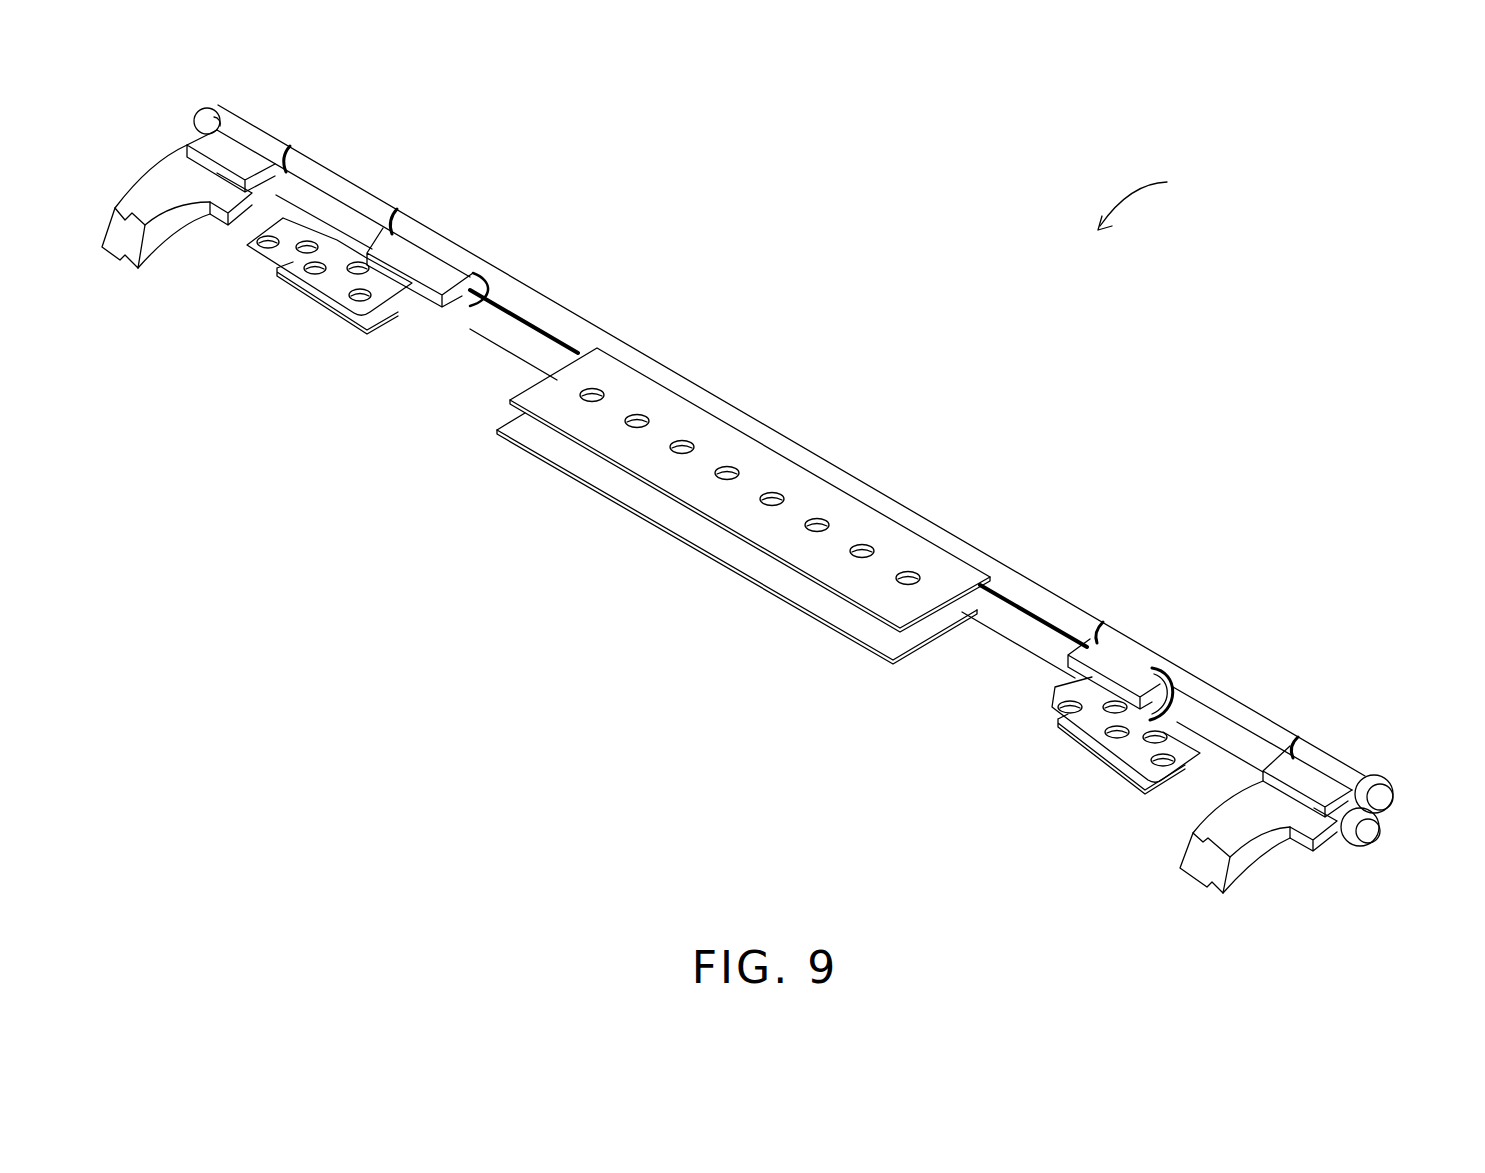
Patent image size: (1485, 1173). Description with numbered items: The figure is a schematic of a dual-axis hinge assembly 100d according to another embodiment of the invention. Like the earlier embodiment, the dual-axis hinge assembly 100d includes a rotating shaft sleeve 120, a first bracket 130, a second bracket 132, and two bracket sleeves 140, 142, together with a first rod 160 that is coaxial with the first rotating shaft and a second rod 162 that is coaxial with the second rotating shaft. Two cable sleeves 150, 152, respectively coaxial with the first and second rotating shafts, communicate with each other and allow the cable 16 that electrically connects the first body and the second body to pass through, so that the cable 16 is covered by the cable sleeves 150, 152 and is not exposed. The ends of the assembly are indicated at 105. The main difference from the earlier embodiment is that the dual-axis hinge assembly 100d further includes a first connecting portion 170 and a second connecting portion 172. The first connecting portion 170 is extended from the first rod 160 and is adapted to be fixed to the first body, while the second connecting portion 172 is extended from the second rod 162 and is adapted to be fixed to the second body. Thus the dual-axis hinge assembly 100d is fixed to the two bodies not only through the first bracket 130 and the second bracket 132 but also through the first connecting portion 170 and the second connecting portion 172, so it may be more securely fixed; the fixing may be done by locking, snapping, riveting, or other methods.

The dual-axis hinge assembly 100d is at (1169, 199).
The cable 16 is at (125, 254).
The pivot pin 105 is at (1405, 779).
The rotating shaft sleeve 120 is at (340, 193).
The first bracket 130 is at (388, 283).
The second bracket 132 is at (303, 288).
The bracket sleeve 140 is at (437, 240).
The bracket sleeve 142 is at (470, 306).
The cable sleeve 150 is at (252, 137).
The cable sleeve 152 is at (255, 188).
The first rod 160 is at (805, 455).
The second rod 162 is at (1040, 638).
The first connecting portion 170 is at (692, 485).
The second connecting portion 172 is at (766, 575).